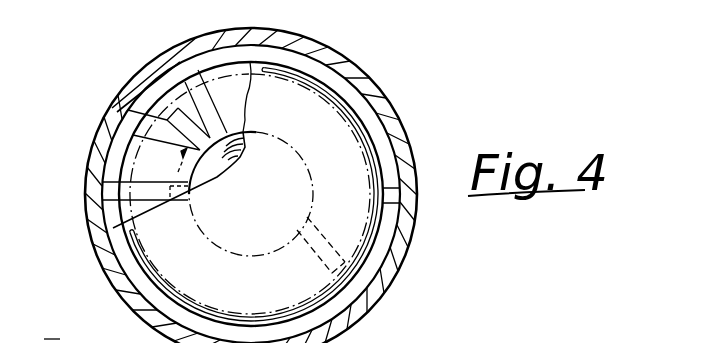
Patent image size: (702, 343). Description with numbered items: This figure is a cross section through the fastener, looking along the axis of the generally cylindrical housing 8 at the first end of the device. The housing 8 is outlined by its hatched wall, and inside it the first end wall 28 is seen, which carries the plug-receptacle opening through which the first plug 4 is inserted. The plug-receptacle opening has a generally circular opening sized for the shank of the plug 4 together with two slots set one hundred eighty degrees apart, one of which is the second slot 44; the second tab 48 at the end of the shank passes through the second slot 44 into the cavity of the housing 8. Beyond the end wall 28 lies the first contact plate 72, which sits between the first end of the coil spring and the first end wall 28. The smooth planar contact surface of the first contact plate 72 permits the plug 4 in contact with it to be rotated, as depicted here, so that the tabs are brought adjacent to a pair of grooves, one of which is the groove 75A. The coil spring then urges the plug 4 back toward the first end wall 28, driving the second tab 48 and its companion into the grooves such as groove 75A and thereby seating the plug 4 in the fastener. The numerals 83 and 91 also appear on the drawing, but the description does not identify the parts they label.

The first plug 4 is at (212, 179).
The housing 8 is at (385, 107).
The first end wall 28 is at (240, 93).
The second slot 44 is at (102, 188).
The second tab 48 is at (118, 108).
The first contact plate 72 is at (314, 125).
The groove 75A is at (200, 82).
The lower member 83 is at (36, 333).
The split ring 91 is at (126, 337).